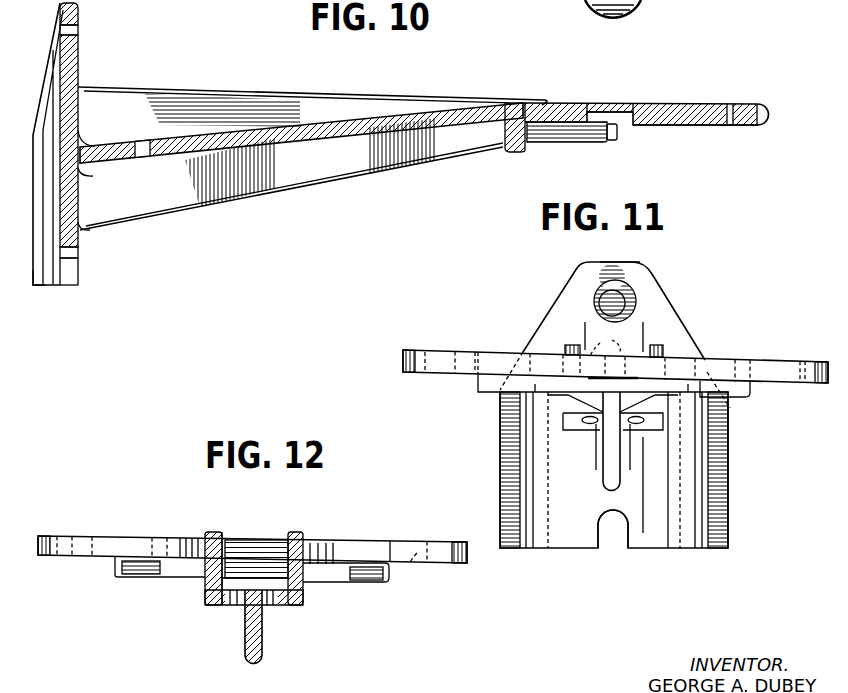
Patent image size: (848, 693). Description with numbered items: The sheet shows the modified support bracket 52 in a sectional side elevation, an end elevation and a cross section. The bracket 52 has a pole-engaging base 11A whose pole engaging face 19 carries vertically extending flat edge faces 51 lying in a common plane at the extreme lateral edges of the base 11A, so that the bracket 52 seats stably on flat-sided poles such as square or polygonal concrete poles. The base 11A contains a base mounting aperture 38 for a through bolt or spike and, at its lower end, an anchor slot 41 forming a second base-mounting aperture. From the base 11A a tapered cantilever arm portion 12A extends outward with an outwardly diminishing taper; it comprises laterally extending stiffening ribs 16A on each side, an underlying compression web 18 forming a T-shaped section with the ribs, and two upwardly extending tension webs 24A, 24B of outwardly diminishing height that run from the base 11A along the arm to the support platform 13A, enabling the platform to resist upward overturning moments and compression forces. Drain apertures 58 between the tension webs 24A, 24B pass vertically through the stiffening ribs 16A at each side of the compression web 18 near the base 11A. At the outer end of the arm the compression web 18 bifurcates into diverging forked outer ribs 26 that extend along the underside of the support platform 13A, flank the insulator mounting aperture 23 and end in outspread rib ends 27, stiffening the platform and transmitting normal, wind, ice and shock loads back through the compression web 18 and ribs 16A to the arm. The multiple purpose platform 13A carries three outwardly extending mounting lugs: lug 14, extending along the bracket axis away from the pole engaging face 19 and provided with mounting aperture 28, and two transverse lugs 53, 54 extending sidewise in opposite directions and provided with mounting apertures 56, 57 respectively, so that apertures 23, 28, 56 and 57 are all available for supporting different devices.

In FIG. 10, the base 11A is at (72, 73).
In FIG. 11, the base 11A is at (662, 314).
In FIG. 10, the cantilever arm portion 12A is at (274, 89).
In FIG. 10, the support platform 13A is at (650, 101).
In FIG. 10, the mounting lug 14 is at (706, 127).
In FIG. 10, the stiffening ribs 16A is at (395, 117).
In FIG. 11, the stiffening ribs 16A is at (600, 452).
In FIG. 12, the stiffening ribs 16A is at (205, 596).
In FIG. 10, the compression web 18 is at (300, 180).
In FIG. 11, the compression web 18 is at (603, 477).
In FIG. 12, the compression web 18 is at (265, 643).
In FIG. 10, the pole engaging face 19 is at (52, 72).
In FIG. 10, the insulator mounting aperture 23 is at (600, 104).
In FIG. 11, the insulator mounting aperture 23 is at (617, 350).
In FIG. 10, the tension web 24A is at (182, 100).
In FIG. 11, the tension web 24A is at (670, 348).
In FIG. 12, the tension web 24A is at (213, 530).
In FIG. 11, the tension web 24B is at (567, 347).
In FIG. 12, the tension web 24B is at (297, 533).
In FIG. 10, the forked outer ribs 26 is at (557, 140).
In FIG. 11, the forked outer ribs 26 is at (547, 386).
In FIG. 12, the forked outer ribs 26 is at (182, 566).
In FIG. 10, the rib ends 27 is at (617, 133).
In FIG. 11, the rib ends 27 is at (480, 390).
In FIG. 12, the rib ends 27 is at (122, 570).
In FIG. 10, the mounting aperture 28 is at (740, 108).
In FIG. 10, the base mounting aperture 38 is at (73, 36).
In FIG. 11, the base mounting aperture 38 is at (623, 297).
In FIG. 10, the anchor slot 41 is at (72, 273).
In FIG. 11, the anchor slot 41 is at (602, 533).
In FIG. 10, the flat edge faces 51 is at (30, 273).
In FIG. 10, the bracket 52 is at (325, 83).
In FIG. 11, the bracket 52 is at (730, 506).
In FIG. 12, the bracket 52 is at (203, 609).
In FIG. 11, the transverse lug 53 is at (738, 356).
In FIG. 12, the transverse lug 53 is at (128, 533).
In FIG. 11, the transverse lug 54 is at (477, 352).
In FIG. 12, the transverse lug 54 is at (390, 540).
In FIG. 11, the mounting aperture 56 is at (776, 366).
In FIG. 12, the mounting aperture 56 is at (68, 530).
In FIG. 10, the mounting aperture 57 is at (638, 3).
In FIG. 11, the mounting aperture 57 is at (428, 350).
In FIG. 12, the mounting aperture 57 is at (417, 553).
In FIG. 10, the drain apertures 58 is at (148, 152).
In FIG. 11, the drain apertures 58 is at (598, 432).
In FIG. 12, the drain apertures 58 is at (238, 610).